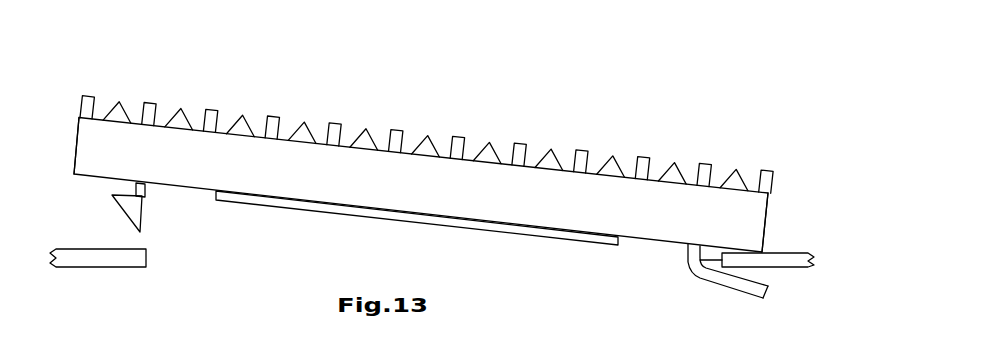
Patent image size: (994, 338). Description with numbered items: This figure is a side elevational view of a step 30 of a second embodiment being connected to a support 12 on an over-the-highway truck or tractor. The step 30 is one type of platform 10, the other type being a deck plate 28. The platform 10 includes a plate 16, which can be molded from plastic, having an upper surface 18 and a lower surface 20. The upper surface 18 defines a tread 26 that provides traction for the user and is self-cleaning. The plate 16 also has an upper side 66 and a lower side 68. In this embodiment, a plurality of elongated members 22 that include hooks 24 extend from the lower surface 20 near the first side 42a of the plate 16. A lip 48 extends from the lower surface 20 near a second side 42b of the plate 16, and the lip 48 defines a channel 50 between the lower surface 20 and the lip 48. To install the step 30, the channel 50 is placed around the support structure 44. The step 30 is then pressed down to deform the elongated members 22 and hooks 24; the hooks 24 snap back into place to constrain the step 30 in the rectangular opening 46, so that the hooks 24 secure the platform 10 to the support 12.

The platform 10 is at (419, 83).
The support 12 is at (803, 225).
The plate 16 is at (154, 137).
The upper surface 18 is at (260, 137).
The lower surface 20 is at (190, 190).
The elongated members 22 is at (145, 188).
The hooks 24 is at (130, 208).
The tread 26 is at (426, 116).
The deck plate 28 is at (478, 125).
The step 30 is at (323, 92).
The first side 42a is at (77, 133).
The second side 42b is at (768, 213).
The support structure 44 is at (118, 260).
The rectangular opening 46 is at (688, 265).
The lip 48 is at (717, 275).
The channel 50 is at (767, 275).
The upper side 66 is at (676, 120).
The lower side 68 is at (461, 264).